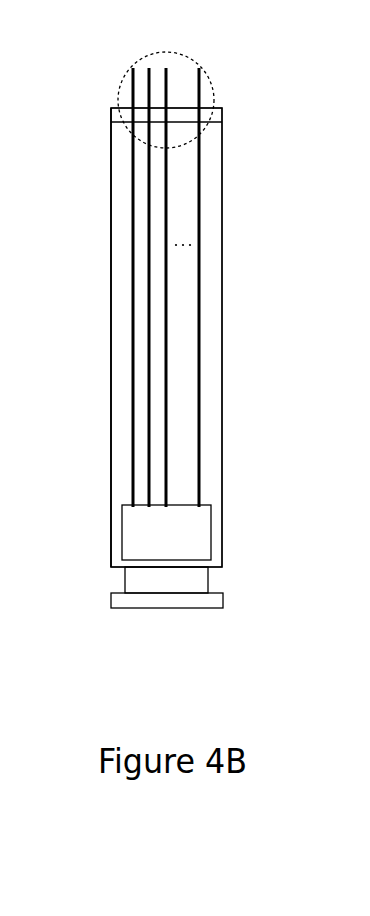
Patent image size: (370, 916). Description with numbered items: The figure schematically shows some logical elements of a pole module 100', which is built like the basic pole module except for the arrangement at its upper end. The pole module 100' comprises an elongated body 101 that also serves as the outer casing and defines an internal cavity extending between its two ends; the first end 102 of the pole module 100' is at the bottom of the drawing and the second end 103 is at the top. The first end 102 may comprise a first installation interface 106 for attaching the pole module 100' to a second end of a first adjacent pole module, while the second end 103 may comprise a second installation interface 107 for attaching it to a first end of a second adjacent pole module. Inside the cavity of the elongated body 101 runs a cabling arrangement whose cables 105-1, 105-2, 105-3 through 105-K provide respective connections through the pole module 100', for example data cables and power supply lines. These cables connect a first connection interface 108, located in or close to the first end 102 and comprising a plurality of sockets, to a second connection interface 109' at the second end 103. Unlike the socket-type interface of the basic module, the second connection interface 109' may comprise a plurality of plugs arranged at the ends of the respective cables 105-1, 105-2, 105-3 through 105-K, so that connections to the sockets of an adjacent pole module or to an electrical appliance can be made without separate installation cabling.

The pole module 100' is at (166, 289).
The elongated body 101 is at (111, 410).
The first end 102 is at (90, 562).
The second end 103 is at (90, 139).
The cable 105-1 is at (133, 222).
The cable 105-2 is at (149, 250).
The cable 105-3 is at (166, 278).
The cable 105-K is at (200, 313).
The first installation interface 106 is at (213, 605).
The second installation interface 107 is at (216, 117).
The first connection interface 108 is at (207, 523).
The second connection interface 109' is at (205, 79).